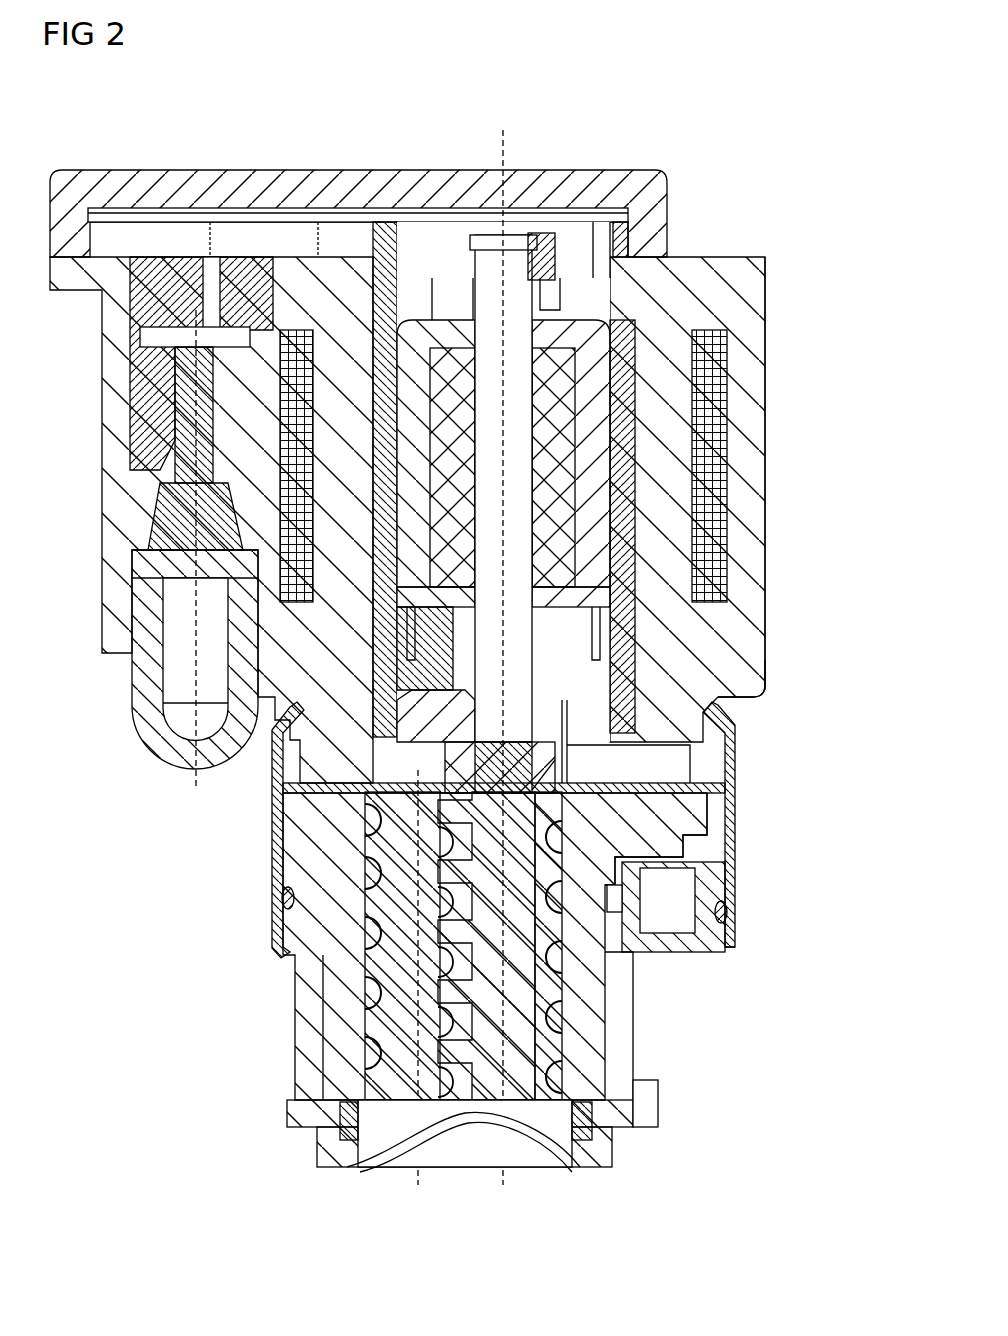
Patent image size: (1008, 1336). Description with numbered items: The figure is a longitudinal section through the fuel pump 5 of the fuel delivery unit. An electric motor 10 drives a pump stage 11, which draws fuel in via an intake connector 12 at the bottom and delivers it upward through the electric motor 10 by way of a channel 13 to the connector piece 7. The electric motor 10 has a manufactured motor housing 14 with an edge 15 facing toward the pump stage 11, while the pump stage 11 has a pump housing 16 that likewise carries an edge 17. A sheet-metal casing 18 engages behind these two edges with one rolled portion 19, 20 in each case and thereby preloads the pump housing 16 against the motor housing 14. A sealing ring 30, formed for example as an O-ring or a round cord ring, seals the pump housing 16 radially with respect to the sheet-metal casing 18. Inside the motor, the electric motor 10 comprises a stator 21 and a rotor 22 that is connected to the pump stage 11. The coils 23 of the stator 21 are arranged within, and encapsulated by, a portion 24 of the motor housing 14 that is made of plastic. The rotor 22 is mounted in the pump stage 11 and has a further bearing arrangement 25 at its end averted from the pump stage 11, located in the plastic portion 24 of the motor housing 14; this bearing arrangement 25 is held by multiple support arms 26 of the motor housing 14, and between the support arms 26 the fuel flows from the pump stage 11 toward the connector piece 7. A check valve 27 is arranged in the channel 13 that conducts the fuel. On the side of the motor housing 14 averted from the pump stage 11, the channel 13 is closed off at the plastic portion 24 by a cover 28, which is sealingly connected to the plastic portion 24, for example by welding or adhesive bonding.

The fuel pump 5 is at (760, 232).
The connector piece 7 is at (180, 720).
The electric motor 10 is at (745, 323).
The pump stage 11 is at (350, 1009).
The intake connector 12 is at (459, 1153).
The channel 13 is at (233, 240).
The motor housing 14 is at (768, 455).
The edge 15 is at (712, 762).
The pump housing 16 is at (728, 870).
The edge 17 is at (712, 930).
The sheet-metal casing 18 is at (715, 825).
The rolled portion 19 is at (712, 728).
The rolled portion 20 is at (728, 958).
The stator 21 is at (732, 504).
The rotor 22 is at (620, 566).
The coils 23 is at (720, 385).
The plastic portion of the motor housing 24 is at (745, 680).
The bearing arrangement 25 is at (540, 245).
The support arms 26 is at (585, 305).
The check valve 27 is at (168, 287).
The cover 28 is at (340, 195).
The sealing ring 30 is at (282, 900).